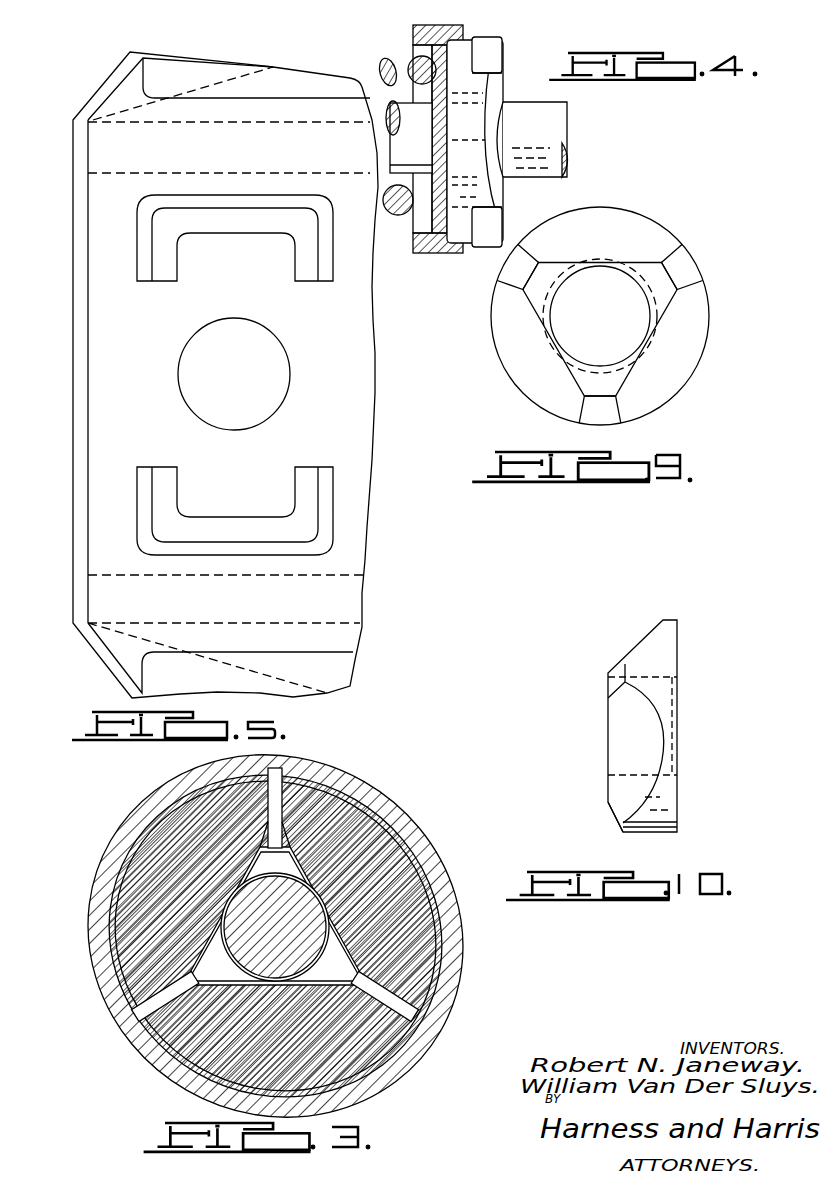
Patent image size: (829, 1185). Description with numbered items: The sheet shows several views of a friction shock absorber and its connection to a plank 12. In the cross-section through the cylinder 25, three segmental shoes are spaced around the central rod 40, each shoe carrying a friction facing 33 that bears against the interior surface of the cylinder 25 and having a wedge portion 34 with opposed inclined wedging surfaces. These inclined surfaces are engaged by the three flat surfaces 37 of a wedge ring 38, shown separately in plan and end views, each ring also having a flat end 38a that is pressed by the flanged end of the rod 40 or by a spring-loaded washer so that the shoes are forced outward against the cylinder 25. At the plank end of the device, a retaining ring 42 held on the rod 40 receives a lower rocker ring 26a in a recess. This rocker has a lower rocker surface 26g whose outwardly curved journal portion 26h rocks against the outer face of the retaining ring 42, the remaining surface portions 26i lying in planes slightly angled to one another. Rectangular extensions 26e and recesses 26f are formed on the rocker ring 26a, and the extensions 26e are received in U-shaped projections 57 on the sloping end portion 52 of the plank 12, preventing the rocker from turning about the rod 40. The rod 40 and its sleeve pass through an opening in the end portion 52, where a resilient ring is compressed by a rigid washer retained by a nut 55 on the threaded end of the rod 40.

In FIG. 5, the plank 12 is at (394, 361).
In FIG. 5, the sloping end portion 52 is at (362, 442).
In FIG. 5, the nut 55 is at (283, 413).
In FIG. 5, the U-shaped projections 57 is at (325, 266).
In FIG. 4, the retaining ring 42 is at (414, 30).
In FIG. 4, the rocker ring 26a is at (512, 46).
In FIG. 4, the rectangular extensions 26e is at (488, 50).
In FIG. 4, the recesses 26f is at (487, 72).
In FIG. 4, the lower rocker surface 26g is at (416, 62).
In FIG. 4, the journal portion 26h is at (440, 156).
In FIG. 4, the surface portions 26i is at (383, 69).
In FIG. 4, the rod 40 is at (550, 122).
In FIG. 9, the rod 40 is at (600, 316).
In FIG. 3, the rod 40 is at (285, 912).
In FIG. 9, the flat surfaces 37 is at (653, 237).
In FIG. 10, the flat surfaces 37 is at (643, 638).
In FIG. 9, the wedge ring 38 is at (718, 262).
In FIG. 10, the wedge ring 38 is at (694, 692).
In FIG. 3, the wedge ring 38 is at (366, 921).
In FIG. 10, the flat end 38a is at (677, 802).
In FIG. 3, the cylinder 25 is at (447, 972).
In FIG. 3, the friction facings 33 is at (120, 865).
In FIG. 3, the wedge portion 34 is at (215, 886).